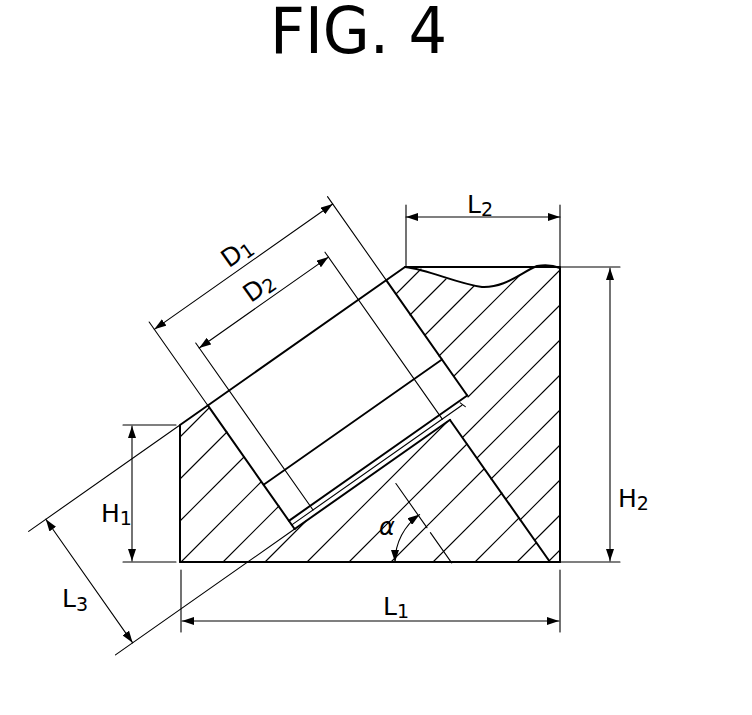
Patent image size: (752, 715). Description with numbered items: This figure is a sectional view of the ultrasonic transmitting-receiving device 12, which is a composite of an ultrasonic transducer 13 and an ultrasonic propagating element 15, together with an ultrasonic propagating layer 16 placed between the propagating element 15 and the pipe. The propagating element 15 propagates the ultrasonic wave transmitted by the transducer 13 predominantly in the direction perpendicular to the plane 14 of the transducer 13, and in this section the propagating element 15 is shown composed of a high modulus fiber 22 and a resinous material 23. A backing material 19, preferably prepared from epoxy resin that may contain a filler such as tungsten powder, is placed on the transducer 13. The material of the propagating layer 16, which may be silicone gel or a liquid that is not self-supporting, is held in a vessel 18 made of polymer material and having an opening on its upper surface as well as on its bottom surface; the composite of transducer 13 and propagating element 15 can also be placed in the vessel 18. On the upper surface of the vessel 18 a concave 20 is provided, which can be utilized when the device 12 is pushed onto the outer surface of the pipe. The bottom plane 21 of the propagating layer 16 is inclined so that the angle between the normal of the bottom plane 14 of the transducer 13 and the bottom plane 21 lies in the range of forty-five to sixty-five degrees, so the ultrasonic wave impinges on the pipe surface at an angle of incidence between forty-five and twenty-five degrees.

The ultrasonic transmitting-receiving device 12 is at (363, 194).
The ultrasonic transducer 13 is at (440, 372).
The plane of the transducer 14 is at (338, 480).
The ultrasonic propagating element 15 is at (480, 400).
The ultrasonic propagating layer 16 is at (447, 447).
The vessel 18 is at (547, 307).
The backing material 19 is at (400, 325).
The concave 20 is at (502, 272).
The bottom plane of the layer 21 is at (533, 565).
The high modulus fiber 22 is at (301, 528).
The resinous material 23 is at (312, 522).